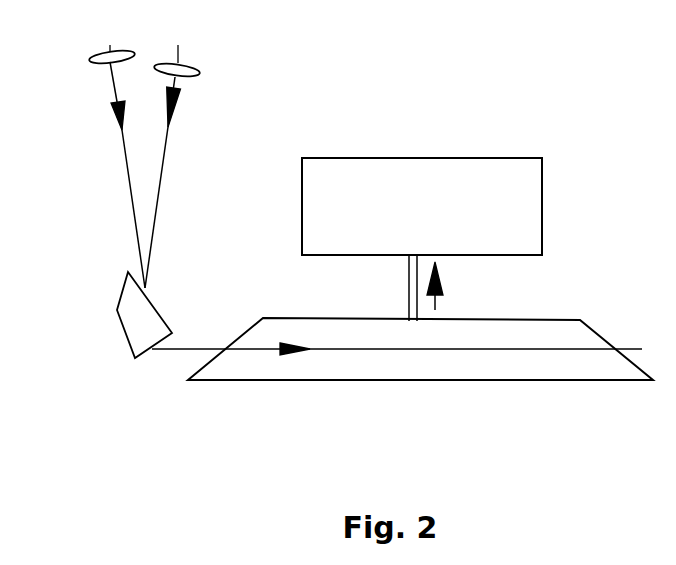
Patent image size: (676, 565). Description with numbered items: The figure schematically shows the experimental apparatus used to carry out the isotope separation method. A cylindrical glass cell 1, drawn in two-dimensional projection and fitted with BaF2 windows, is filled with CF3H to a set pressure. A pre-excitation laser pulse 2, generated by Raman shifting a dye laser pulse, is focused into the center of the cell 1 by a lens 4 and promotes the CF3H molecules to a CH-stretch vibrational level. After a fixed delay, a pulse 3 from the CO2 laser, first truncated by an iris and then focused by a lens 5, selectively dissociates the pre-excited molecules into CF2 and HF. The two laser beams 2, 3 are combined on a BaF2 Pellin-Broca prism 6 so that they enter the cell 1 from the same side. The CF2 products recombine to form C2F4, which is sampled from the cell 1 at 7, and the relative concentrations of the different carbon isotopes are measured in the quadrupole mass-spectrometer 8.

The cylindrical glass cell 1 is at (453, 383).
The pre-excitation laser pulse 2 is at (168, 130).
The CO2 laser pulse 3 is at (125, 132).
The lens 4 is at (188, 60).
The lens 5 is at (97, 53).
The Pellin-Broca prism 6 is at (120, 322).
The sampling point 7 is at (437, 302).
The quadrupole mass-spectrometer 8 is at (542, 212).